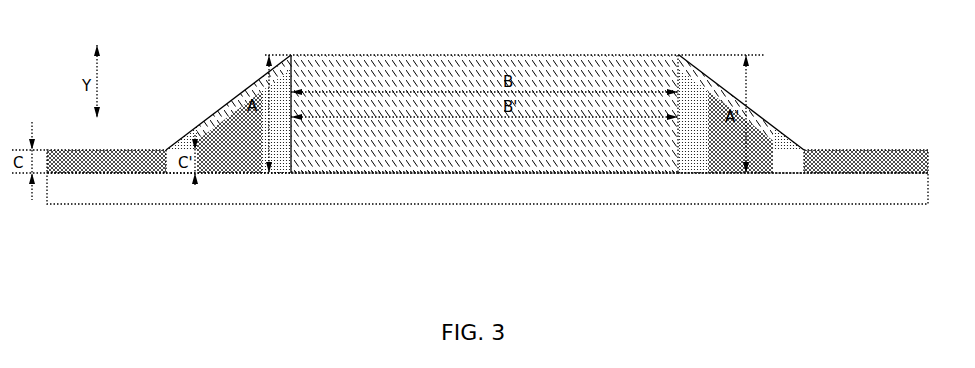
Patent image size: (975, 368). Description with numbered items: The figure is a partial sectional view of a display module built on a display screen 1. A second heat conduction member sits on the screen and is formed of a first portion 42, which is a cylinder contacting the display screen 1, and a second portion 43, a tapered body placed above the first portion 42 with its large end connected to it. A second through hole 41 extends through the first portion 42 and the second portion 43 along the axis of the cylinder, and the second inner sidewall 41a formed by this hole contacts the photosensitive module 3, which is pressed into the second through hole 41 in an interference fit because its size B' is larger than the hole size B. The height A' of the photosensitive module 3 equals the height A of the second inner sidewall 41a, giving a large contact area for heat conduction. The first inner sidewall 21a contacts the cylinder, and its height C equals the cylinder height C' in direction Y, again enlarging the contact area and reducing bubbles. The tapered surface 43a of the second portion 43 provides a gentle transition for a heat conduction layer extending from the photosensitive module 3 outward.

The display screen 1 is at (450, 190).
The photosensitive module 3 is at (598, 170).
The first inner sidewall 21a is at (135, 158).
The second through hole 41 is at (315, 173).
The second inner sidewall 41a is at (342, 173).
The first portion 42 is at (230, 173).
The second portion 43 is at (227, 102).
The tapered surface 43a is at (255, 85).